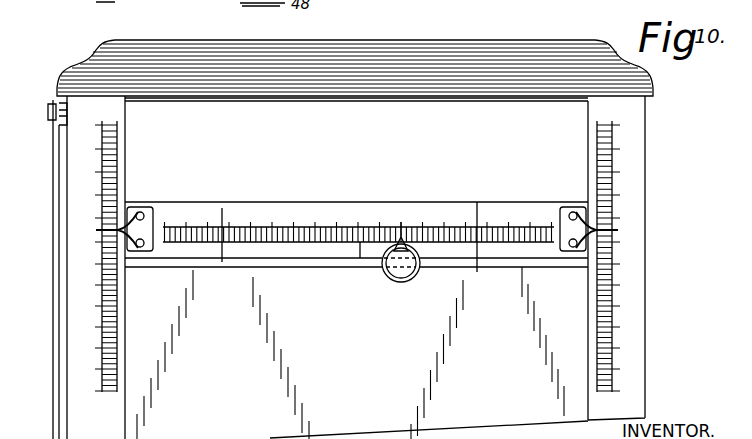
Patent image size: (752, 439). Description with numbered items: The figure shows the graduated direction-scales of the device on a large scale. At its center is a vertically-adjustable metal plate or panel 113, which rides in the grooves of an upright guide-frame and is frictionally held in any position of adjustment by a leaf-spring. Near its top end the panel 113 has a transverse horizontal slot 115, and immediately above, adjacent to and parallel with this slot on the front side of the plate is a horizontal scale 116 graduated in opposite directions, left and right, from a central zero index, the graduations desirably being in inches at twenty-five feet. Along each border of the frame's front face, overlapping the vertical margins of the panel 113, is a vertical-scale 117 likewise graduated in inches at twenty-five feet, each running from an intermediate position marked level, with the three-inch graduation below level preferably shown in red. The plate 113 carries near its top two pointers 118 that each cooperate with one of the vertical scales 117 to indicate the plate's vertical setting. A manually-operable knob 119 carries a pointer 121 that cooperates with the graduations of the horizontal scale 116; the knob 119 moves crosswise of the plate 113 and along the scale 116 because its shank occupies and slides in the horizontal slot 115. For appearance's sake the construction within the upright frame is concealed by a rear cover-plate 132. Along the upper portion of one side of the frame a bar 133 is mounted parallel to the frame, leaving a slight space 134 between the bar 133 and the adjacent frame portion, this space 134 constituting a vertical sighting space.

The vertically-adjustable metal plate or panel 113 is at (362, 353).
The transverse horizontal slot 115 is at (303, 264).
The horizontal scale 116 is at (323, 211).
The vertical-scale 117 is at (78, 306).
The pointer 118 is at (151, 216).
The manually-operable knob 119 is at (402, 279).
The pointer 121 is at (384, 270).
The rear cover-plate 132 is at (356, 128).
The bar 133 is at (60, 222).
The slight space 134 is at (66, 256).